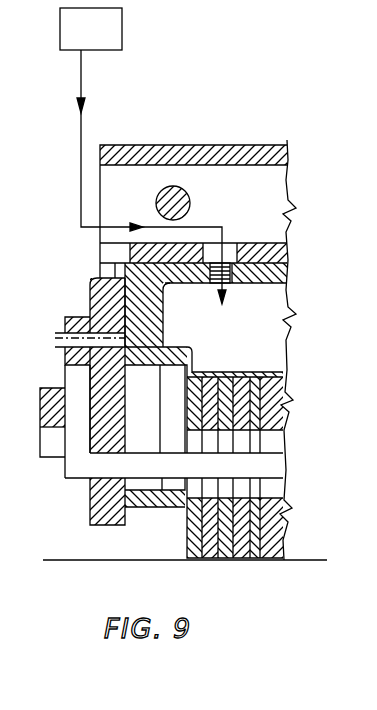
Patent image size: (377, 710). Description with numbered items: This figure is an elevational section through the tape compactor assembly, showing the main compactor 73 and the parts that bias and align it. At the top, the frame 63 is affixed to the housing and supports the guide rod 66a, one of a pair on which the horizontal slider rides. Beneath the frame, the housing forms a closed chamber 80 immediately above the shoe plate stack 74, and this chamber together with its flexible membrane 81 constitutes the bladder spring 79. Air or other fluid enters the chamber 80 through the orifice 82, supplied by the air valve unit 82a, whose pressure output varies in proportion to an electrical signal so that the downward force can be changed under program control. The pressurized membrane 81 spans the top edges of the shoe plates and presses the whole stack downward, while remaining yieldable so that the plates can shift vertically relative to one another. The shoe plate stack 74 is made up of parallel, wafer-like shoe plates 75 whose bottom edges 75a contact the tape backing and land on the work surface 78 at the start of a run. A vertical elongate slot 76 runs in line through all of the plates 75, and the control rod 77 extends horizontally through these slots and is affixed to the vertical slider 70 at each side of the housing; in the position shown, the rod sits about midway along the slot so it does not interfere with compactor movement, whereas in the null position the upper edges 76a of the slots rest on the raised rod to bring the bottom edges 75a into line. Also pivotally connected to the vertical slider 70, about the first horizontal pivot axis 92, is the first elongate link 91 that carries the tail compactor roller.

The air valve unit 82a is at (122, 32).
The orifice 82 is at (224, 243).
The frame 63 is at (243, 146).
The guide rod 66a is at (190, 201).
The bladder spring 79 is at (260, 313).
The closed chamber 80 is at (165, 322).
The vertical slider 70 is at (90, 300).
The first horizontal pivot axis 92 is at (64, 338).
The first elongate link 91 is at (64, 373).
The flexible membrane 81 is at (207, 373).
The shoe plate stack 74 is at (283, 402).
The upper edge of slot 76a is at (262, 444).
The vertical elongate slot 76 is at (285, 470).
The main compactor 73 is at (283, 503).
The shoe plate 75 is at (287, 539).
The bottom edge of shoe plate 75a is at (235, 561).
The control rod 77 is at (141, 495).
The work surface 78 is at (85, 559).